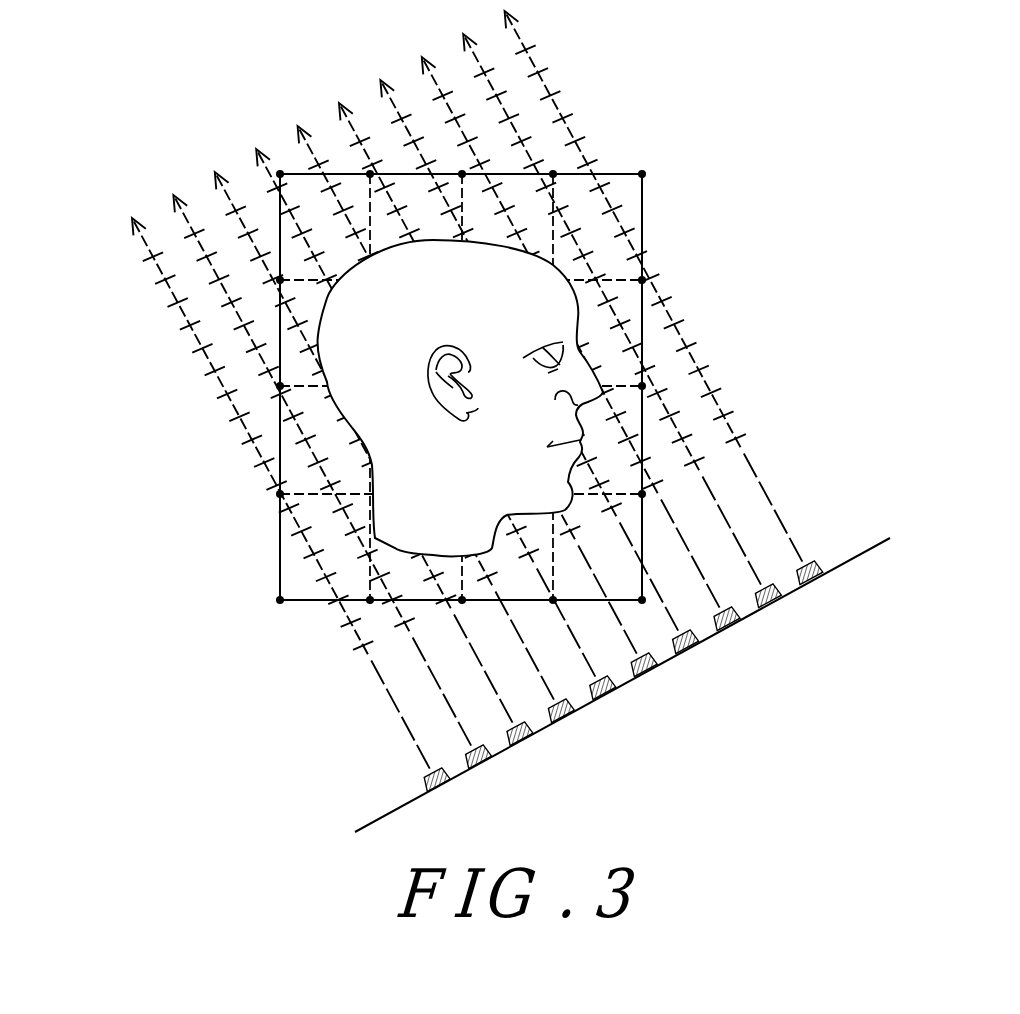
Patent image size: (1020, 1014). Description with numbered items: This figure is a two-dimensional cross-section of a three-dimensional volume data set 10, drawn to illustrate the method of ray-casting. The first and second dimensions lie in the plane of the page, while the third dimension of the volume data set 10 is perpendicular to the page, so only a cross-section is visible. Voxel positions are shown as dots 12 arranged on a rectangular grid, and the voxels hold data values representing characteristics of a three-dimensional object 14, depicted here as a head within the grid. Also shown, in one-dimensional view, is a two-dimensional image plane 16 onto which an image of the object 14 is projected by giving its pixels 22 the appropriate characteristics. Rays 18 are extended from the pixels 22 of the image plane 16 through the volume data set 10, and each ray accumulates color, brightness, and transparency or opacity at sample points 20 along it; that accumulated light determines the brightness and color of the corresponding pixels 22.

The volume data set 10 is at (642, 174).
The dots 12 is at (275, 498).
The three-dimensional object 14 is at (420, 296).
The image plane 16 is at (868, 549).
The rays 18 is at (392, 703).
The sample points 20 is at (577, 110).
The pixels 22 is at (481, 770).